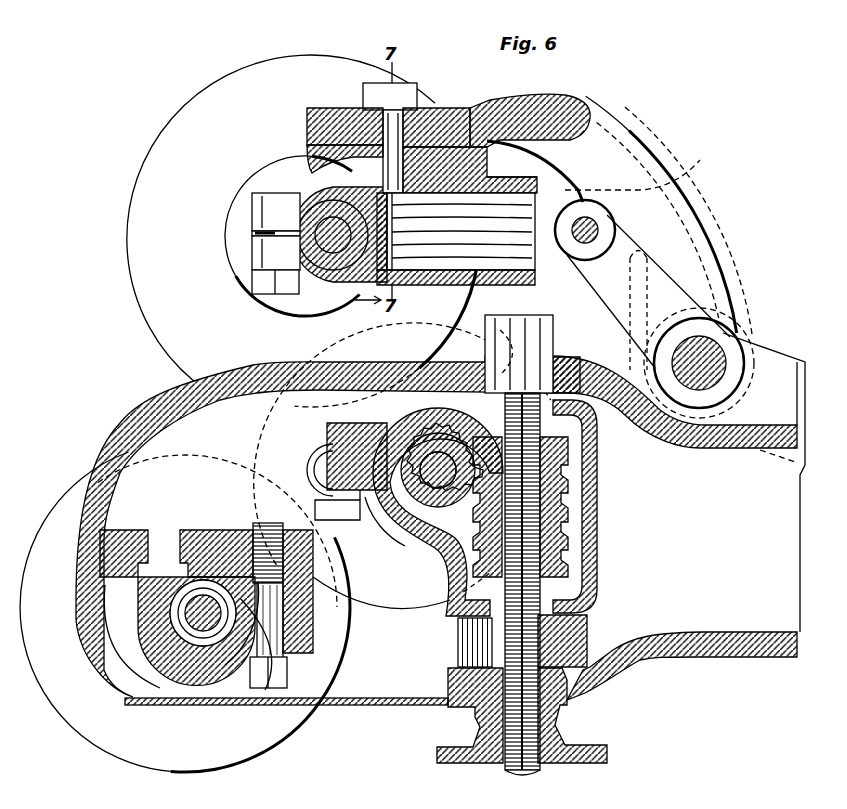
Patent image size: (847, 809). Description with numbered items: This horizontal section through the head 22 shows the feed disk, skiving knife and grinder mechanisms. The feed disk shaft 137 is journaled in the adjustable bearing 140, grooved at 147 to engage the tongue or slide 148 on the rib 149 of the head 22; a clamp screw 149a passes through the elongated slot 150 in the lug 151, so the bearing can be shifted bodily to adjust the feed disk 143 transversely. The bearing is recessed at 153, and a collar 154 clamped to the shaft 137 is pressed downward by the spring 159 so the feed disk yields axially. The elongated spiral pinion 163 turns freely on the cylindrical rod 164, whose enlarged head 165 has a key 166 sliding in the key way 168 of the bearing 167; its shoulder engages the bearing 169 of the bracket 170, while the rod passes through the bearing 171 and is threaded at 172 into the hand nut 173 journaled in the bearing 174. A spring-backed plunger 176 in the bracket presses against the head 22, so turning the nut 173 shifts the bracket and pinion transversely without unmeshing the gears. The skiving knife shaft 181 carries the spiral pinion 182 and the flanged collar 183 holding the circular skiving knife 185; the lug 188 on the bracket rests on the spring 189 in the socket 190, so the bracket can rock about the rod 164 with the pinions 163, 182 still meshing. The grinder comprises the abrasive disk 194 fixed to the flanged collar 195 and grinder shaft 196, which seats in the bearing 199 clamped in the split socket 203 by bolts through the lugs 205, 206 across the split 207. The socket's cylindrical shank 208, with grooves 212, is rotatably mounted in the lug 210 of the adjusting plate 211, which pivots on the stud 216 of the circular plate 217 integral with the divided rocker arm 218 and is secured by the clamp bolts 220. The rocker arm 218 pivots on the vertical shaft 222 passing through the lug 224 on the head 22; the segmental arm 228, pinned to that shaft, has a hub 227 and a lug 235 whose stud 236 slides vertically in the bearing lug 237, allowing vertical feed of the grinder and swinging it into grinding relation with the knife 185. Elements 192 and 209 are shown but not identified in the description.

The head 22 is at (152, 405).
The feed disk shaft 137 is at (205, 625).
The adjustable bearing 140 is at (200, 640).
The feed disk 143 is at (72, 710).
The groove 147 is at (312, 625).
The tongue or slide 148 is at (233, 577).
The rib 149 is at (222, 528).
The clamp screw 149a is at (310, 675).
The horizontally elongated slot 150 is at (312, 650).
The lug 151 is at (300, 615).
The recess 153 is at (235, 672).
The collar 154 is at (165, 640).
The spring 159 is at (195, 630).
The elongated spiral pinion 163 is at (558, 505).
The cylindrical rod 164 is at (565, 489).
The enlarged head 165 is at (556, 330).
The key 166 is at (487, 331).
The bearing 167 is at (567, 355).
The key way 168 is at (487, 360).
The bearing 169 is at (560, 425).
The bracket 170 is at (597, 478).
The bearing 171 is at (583, 592).
The threaded end 172 is at (548, 637).
The hand operated nut 173 is at (578, 740).
The bearing 174 is at (600, 684).
The plunger 176 is at (458, 655).
The skiving knife shaft 181 is at (415, 520).
The spiral pinion 182 is at (440, 530).
The flanged collar 183 is at (405, 568).
The circular skiving knife 185 is at (404, 598).
The finger or lug 188 is at (268, 437).
The spring 189 is at (318, 455).
The socket 190 is at (316, 470).
The base plate 192 is at (228, 690).
The abrasive disk 194 is at (128, 215).
The flanged collar 195 is at (240, 246).
The grinder shaft 196 is at (318, 290).
The bearing 199 is at (320, 200).
The split socket 203 is at (300, 168).
The lug 205 is at (255, 265).
The lug 206 is at (252, 208).
The split 207 is at (265, 233).
The cylindrical shank 208 is at (517, 207).
The clamp nut 209 is at (265, 290).
The lug 210 is at (495, 178).
The adjusting plate 211 is at (447, 170).
The grooves 212 is at (520, 215).
The stud 216 is at (372, 120).
The circular plate 217 is at (425, 112).
The divided rocker arm 218 is at (643, 160).
The clamp bolts 220 is at (375, 88).
The vertical shaft 222 is at (724, 362).
The lug 224 is at (572, 367).
The hub 227 is at (708, 330).
The segmental arm 228 is at (652, 275).
The lug 235 is at (690, 168).
The stud 236 is at (605, 220).
The bearing lug 237 is at (600, 226).